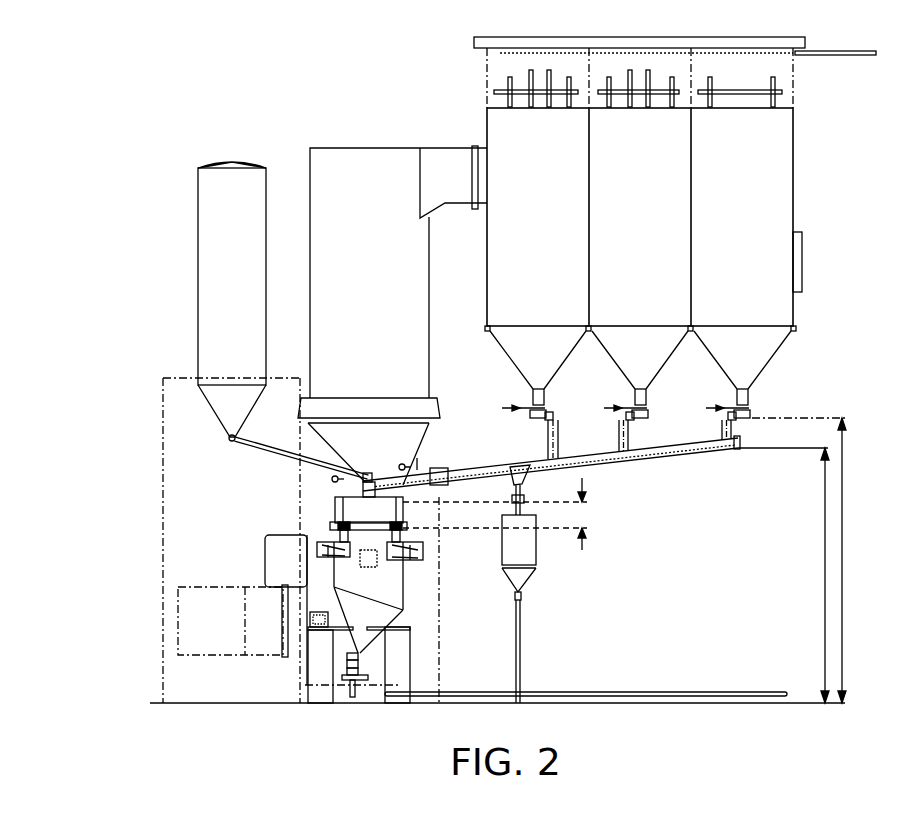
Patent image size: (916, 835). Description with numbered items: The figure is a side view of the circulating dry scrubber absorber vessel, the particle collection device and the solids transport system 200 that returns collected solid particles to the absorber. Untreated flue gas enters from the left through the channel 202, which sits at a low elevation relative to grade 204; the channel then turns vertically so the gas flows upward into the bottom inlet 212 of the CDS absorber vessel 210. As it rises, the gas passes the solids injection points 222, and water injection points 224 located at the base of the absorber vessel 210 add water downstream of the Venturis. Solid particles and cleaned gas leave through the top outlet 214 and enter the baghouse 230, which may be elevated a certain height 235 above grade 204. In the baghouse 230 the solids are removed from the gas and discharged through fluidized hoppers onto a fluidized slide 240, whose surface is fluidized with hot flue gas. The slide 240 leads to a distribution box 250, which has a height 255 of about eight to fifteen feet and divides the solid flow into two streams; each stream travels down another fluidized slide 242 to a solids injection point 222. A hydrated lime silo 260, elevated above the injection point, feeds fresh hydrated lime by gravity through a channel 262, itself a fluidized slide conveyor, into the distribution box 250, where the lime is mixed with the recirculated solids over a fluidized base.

The solids transport system 200 is at (155, 85).
The channel 202 is at (207, 623).
The grade 204 is at (155, 703).
The circulating dry scrubber (CDS) absorber vessel 210 is at (393, 263).
The bottom inlet 212 is at (387, 435).
The top outlet 214 is at (456, 160).
The solids injection point 222 is at (343, 560).
The water injection point 224 is at (340, 488).
The baghouse 230 is at (667, 195).
The height 235 is at (815, 560).
The fluidized slide 240 is at (551, 470).
The fluidized slide 242 is at (423, 550).
The distribution box 250 is at (357, 520).
The height 255 is at (519, 584).
The hydrated lime silo 260 is at (232, 280).
The channel 262 is at (330, 472).